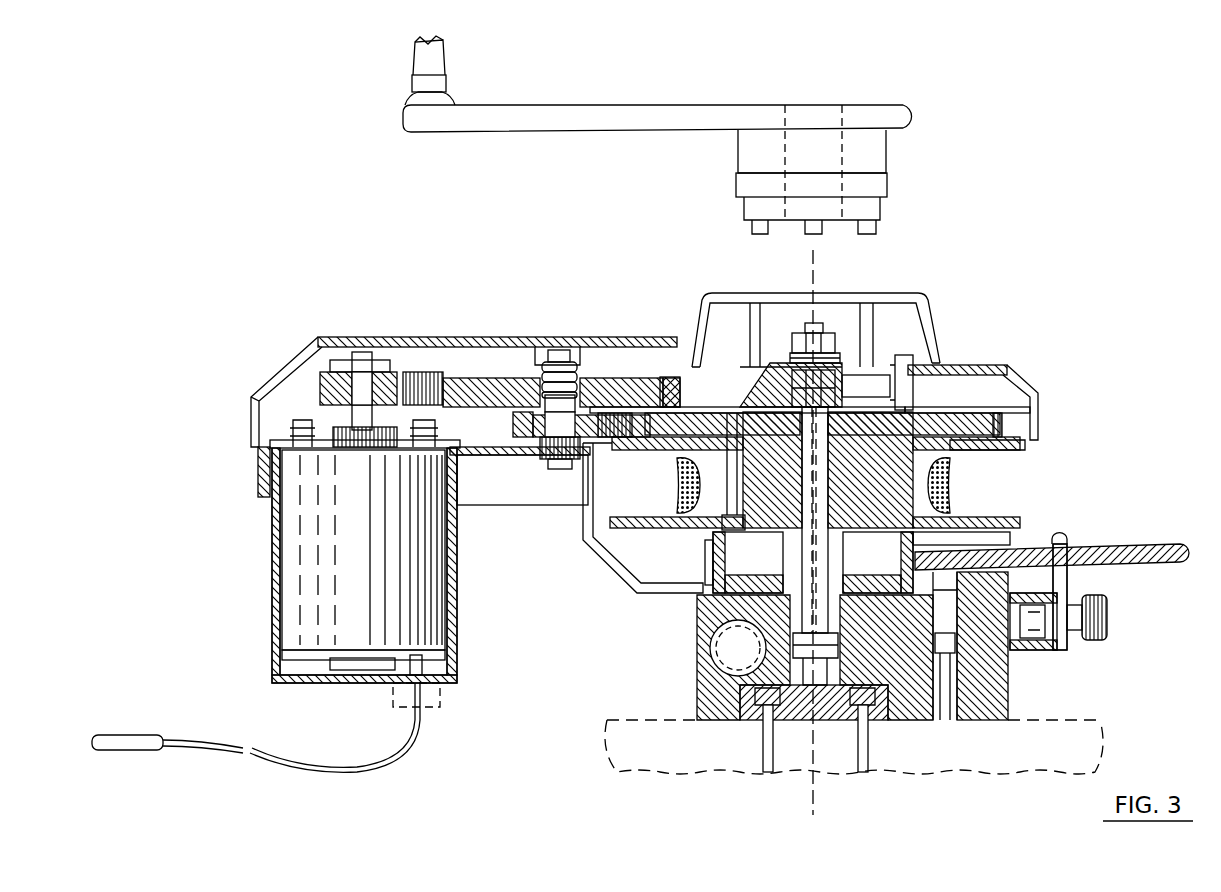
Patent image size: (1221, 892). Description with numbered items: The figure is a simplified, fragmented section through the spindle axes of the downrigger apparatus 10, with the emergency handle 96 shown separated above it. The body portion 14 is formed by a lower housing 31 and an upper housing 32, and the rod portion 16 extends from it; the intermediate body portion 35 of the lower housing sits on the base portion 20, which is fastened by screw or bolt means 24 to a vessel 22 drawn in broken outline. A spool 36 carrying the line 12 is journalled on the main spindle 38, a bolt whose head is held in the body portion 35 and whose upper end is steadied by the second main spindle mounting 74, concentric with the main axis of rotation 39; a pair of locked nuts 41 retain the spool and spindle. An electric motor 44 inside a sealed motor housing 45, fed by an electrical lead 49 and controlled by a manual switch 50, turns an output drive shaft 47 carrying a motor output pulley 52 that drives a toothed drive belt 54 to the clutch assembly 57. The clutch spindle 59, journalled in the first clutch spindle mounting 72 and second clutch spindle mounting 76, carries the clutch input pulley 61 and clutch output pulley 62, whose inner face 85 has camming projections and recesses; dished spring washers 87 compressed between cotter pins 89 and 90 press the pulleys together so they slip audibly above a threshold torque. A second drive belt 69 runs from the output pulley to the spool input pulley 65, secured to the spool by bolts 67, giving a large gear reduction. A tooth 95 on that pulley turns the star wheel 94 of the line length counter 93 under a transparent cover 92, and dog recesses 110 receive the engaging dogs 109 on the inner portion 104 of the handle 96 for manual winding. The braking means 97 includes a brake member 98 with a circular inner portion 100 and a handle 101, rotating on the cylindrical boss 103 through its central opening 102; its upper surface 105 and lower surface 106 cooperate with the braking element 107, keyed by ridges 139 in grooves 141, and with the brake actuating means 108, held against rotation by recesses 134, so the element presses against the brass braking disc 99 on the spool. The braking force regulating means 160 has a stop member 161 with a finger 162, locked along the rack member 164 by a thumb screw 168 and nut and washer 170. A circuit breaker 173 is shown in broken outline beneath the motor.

The downrigger apparatus 10 is at (1046, 330).
The line 12 is at (675, 492).
The body portion 14 is at (600, 623).
The rod portion 16 is at (690, 670).
The base portion 20 is at (885, 722).
The vessel 22 is at (1100, 716).
The screw or bolt means 24 is at (762, 745).
The lower housing 31 is at (603, 580).
The upper housing 32 is at (490, 288).
The intermediate body portion 35 is at (990, 700).
The spool 36 is at (1032, 478).
The main spindle 38 is at (822, 472).
The main axis of rotation 39 is at (811, 268).
The locked nuts 41 is at (838, 352).
The electric motor 44 is at (310, 575).
The motor housing 45 is at (272, 620).
The output drive shaft 47 is at (362, 350).
The electrical lead 49 is at (400, 758).
The manual switch 50 is at (150, 733).
The motor output pulley 52 is at (330, 400).
The toothed drive belt 54 is at (423, 372).
The clutch assembly 57 is at (600, 365).
The clutch spindle 59 is at (560, 348).
The clutch input pulley 61 is at (480, 380).
The clutch output pulley 62 is at (541, 452).
The spool input pulley 65 is at (985, 422).
The bolts 67 is at (748, 470).
The drive belt 69 is at (643, 518).
The first clutch spindle mounting 72 is at (598, 450).
The second main spindle mounting 74 is at (808, 334).
The second clutch spindle mounting 76 is at (545, 345).
The inner face of clutch output member 85 is at (545, 398).
The dished spring washers 87 is at (592, 385).
The cotter pin 89 is at (540, 367).
The cotter pin 90 is at (556, 462).
The transparent cover 92 is at (920, 296).
The line length counter 93 is at (880, 372).
The star wheel 94 is at (915, 368).
The tooth 95 is at (922, 410).
The emergency handle 96 is at (757, 103).
The braking means 97 is at (1022, 545).
The brake member 98 is at (1060, 597).
The braking disc 99 is at (905, 500).
The inner portion 100 is at (706, 578).
The handle 101 is at (1160, 546).
The central opening 102 is at (895, 540).
The cylindrical boss 103 is at (860, 603).
The inner portion 104 is at (878, 210).
The upper surface 105 is at (793, 500).
The lower surface 106 is at (706, 560).
The braking element 107 is at (925, 540).
The brake actuating means 108 is at (760, 603).
The engaging dogs 109 is at (752, 229).
The dog recesses 110 is at (742, 408).
The recesses 134 is at (700, 610).
The ridges 139 is at (748, 562).
The grooves 141 is at (878, 562).
The braking force regulating means 160 is at (1122, 635).
The stop member 161 is at (1070, 600).
The finger 162 is at (1064, 540).
The rack member 164 is at (1060, 645).
The thumb screw 168 is at (1112, 616).
The nut and washer 170 is at (1030, 641).
The circuit breaker 173 is at (440, 692).